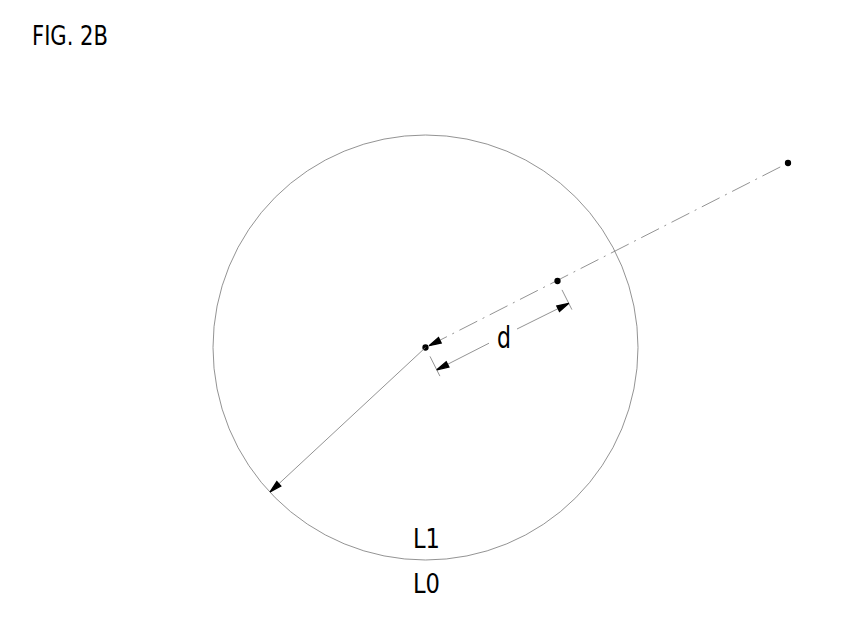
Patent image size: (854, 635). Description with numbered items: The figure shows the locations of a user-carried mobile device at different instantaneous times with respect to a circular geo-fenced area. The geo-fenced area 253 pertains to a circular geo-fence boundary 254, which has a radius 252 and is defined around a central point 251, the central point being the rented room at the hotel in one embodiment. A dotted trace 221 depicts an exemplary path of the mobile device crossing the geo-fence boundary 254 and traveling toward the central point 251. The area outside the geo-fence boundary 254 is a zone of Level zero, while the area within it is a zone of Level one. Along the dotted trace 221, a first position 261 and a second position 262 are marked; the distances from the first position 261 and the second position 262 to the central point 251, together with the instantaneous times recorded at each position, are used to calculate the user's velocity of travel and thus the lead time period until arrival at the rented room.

The geo-fence boundary 254 is at (405, 332).
The central point 251 is at (406, 332).
The radius 252 is at (348, 420).
The geo-fenced area 253 is at (581, 436).
The dotted trace 221 is at (608, 254).
The first position 261 is at (795, 147).
The second position 262 is at (545, 264).